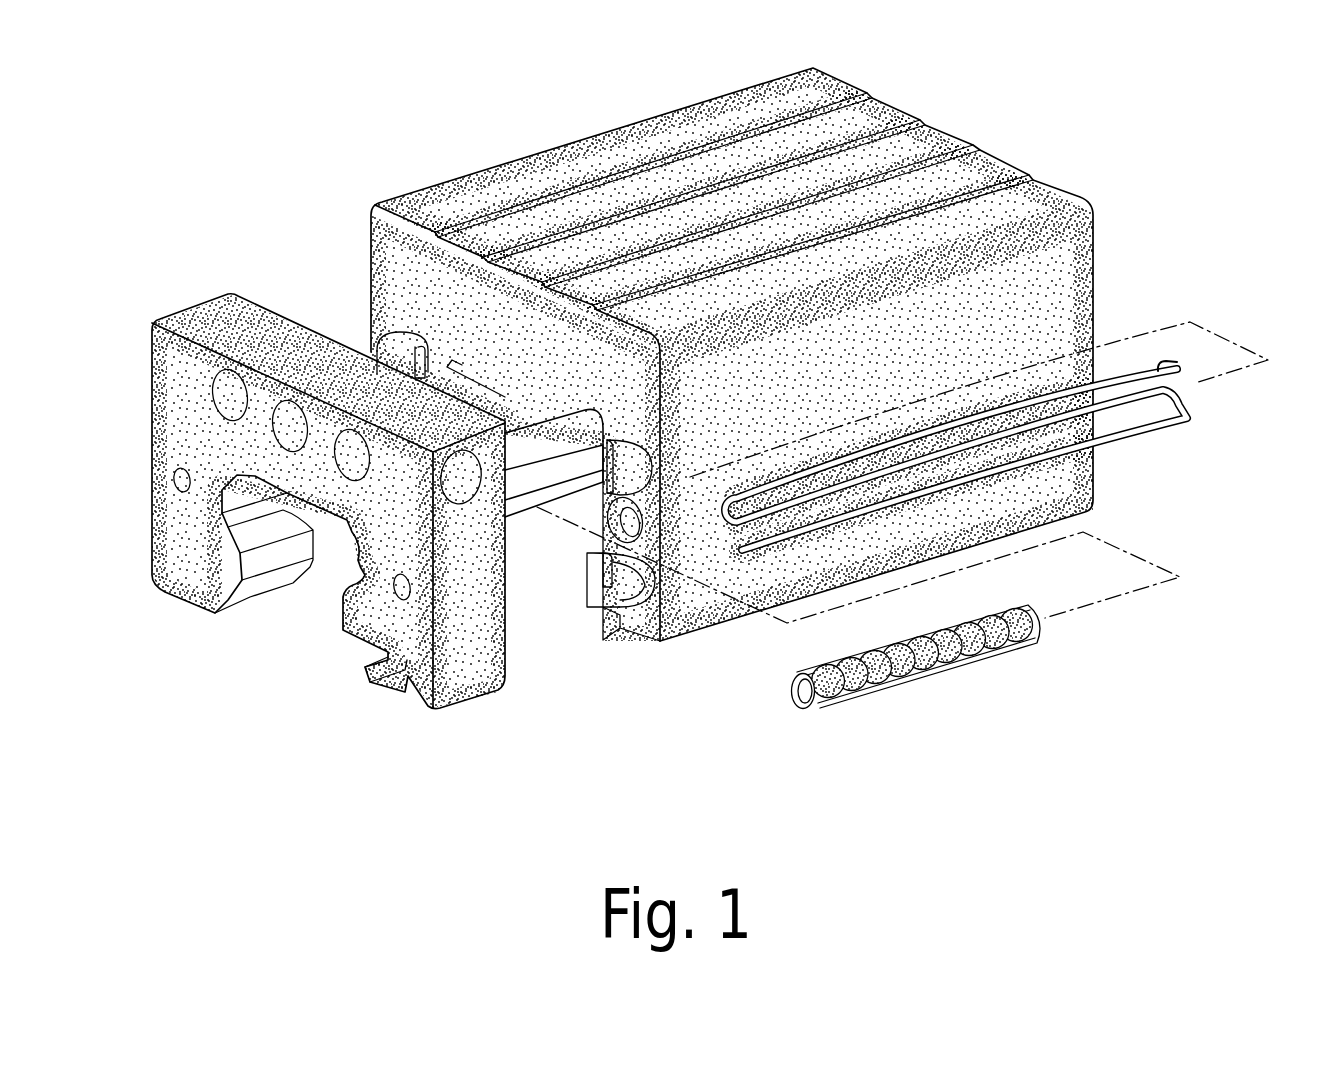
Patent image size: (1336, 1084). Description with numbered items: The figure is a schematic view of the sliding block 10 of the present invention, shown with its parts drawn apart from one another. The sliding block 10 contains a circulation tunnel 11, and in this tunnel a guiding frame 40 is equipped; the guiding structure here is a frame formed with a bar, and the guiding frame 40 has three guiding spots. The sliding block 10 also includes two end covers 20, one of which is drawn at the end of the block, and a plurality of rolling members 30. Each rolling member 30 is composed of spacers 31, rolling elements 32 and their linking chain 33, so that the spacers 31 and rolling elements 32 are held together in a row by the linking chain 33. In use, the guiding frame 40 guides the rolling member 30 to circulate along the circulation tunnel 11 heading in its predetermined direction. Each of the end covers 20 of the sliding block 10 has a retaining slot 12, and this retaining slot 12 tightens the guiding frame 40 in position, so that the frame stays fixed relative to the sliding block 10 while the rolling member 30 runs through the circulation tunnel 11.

The sliding block 10 is at (655, 130).
The circulation tunnel 11 is at (375, 350).
The retaining slot 12 is at (425, 342).
The end cover 20 is at (228, 322).
The rolling member 30 is at (940, 669).
The spacer 31 is at (795, 700).
The rolling element 32 is at (1000, 607).
The linking chain 33 is at (1013, 654).
The guiding frame 40 is at (1120, 438).